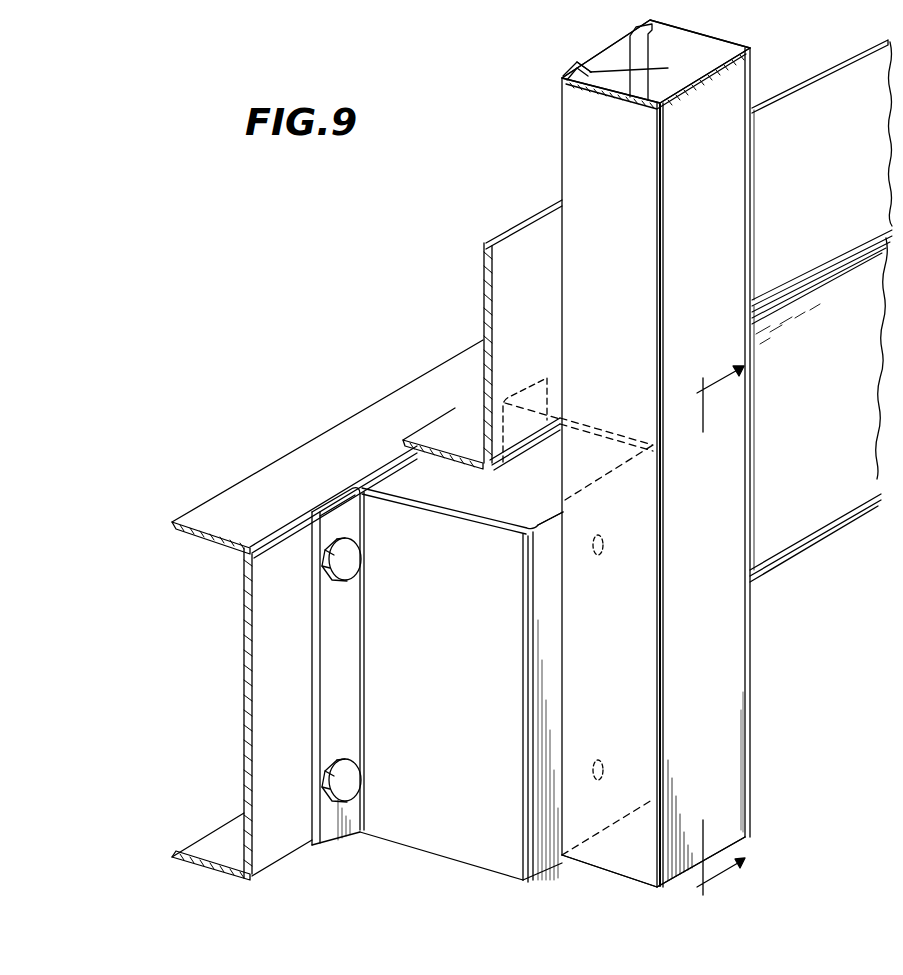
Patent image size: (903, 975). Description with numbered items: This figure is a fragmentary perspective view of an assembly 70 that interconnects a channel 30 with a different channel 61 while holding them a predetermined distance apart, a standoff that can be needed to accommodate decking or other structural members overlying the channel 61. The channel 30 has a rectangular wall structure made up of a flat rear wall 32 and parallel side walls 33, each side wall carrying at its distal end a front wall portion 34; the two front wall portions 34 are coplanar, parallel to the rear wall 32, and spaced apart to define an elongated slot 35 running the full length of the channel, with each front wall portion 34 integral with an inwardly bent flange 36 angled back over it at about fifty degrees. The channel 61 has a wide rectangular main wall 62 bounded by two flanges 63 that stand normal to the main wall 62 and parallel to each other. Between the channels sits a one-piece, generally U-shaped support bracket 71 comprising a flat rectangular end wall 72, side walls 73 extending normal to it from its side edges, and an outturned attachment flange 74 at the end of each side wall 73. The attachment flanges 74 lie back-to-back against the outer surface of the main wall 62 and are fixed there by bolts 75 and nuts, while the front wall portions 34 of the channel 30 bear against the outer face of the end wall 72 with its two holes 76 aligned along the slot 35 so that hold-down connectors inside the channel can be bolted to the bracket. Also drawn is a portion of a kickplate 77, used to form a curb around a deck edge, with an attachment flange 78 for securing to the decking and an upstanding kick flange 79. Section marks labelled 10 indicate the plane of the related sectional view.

The section line for FIG. 10 is at (707, 640).
The channel 30 is at (752, 762).
The rear wall 32 is at (735, 667).
The side walls 33 is at (716, 42).
The front wall portions 34 is at (650, 25).
The slot 35 is at (625, 62).
The flange 36 is at (646, 64).
The channel 61 is at (324, 610).
The main wall 62 is at (256, 688).
The flanges 63 is at (215, 536).
The assembly 70 is at (480, 530).
The support bracket 71 is at (480, 615).
The end wall 72 is at (546, 524).
The side walls 73 is at (520, 465).
The attachment flange 74 is at (338, 512).
The bolts 75 is at (352, 562).
The holes 76 is at (602, 538).
The kickplate 77 is at (477, 325).
The attachment flange 78 is at (440, 420).
The kick flange 79 is at (483, 277).